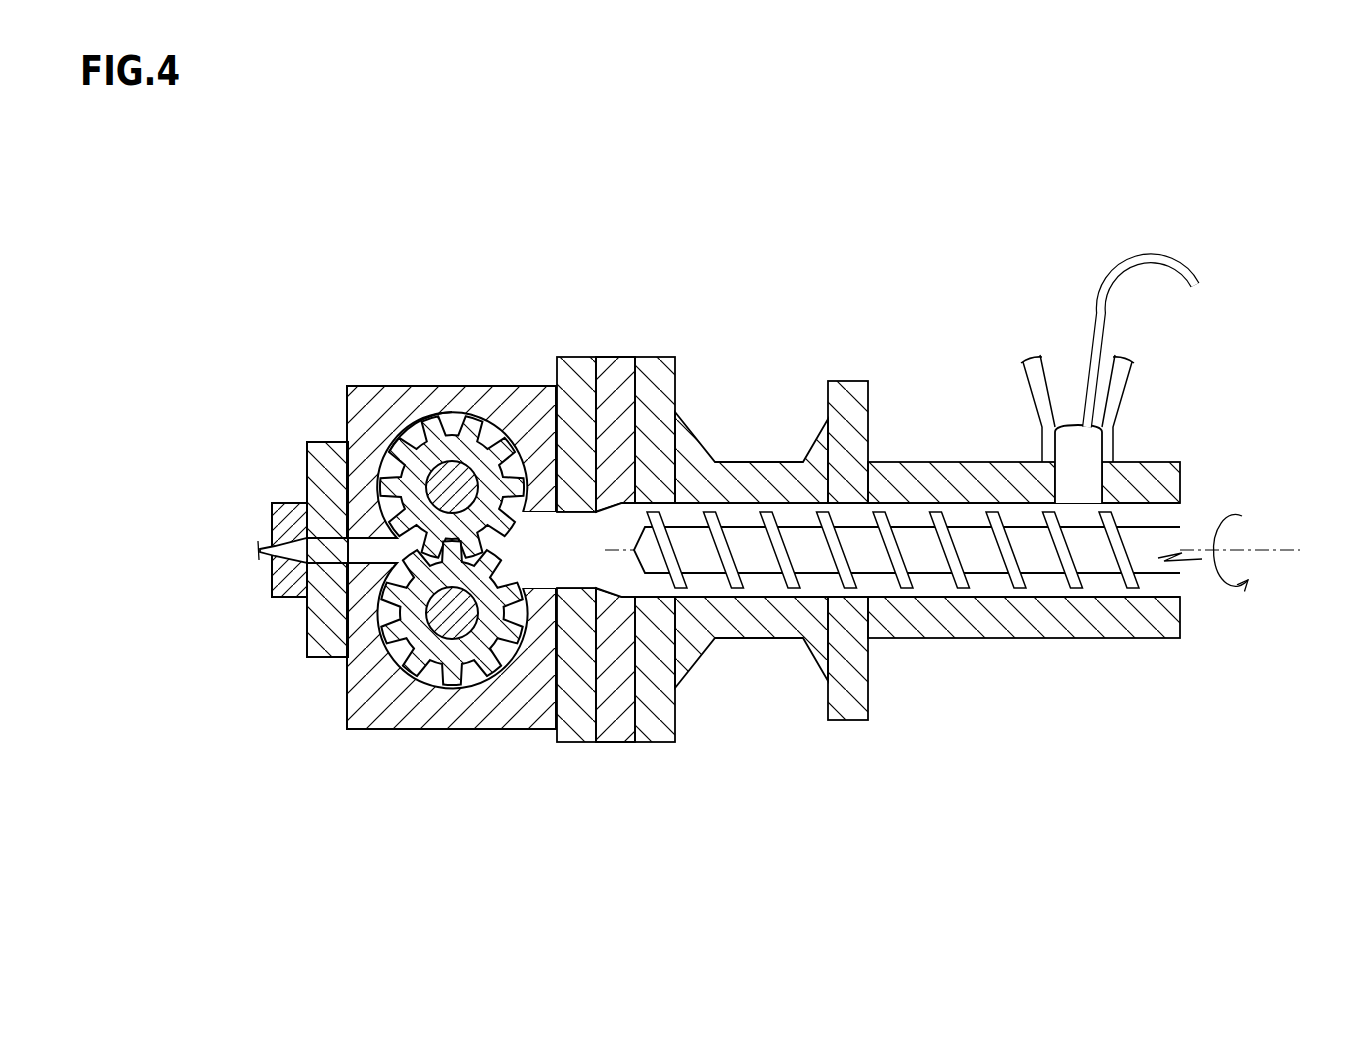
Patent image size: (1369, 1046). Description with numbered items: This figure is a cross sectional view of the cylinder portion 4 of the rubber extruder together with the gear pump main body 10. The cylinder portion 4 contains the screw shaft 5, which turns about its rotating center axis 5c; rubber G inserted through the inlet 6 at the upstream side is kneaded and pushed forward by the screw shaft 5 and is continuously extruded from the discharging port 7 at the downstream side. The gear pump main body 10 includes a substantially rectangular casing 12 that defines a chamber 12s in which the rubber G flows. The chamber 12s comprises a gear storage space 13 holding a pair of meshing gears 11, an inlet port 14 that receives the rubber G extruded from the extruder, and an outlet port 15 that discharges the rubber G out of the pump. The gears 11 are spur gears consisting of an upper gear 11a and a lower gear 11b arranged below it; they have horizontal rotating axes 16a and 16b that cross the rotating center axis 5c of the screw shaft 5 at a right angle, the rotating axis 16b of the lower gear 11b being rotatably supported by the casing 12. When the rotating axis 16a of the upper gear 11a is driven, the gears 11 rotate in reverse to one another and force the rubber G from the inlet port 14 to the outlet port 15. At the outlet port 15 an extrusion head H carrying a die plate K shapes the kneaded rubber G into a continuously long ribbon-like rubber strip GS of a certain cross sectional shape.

The gear pump main body 10 is at (449, 498).
The casing 12 is at (403, 385).
The gear storage space 13 is at (383, 453).
The chamber 12s is at (417, 432).
The outlet port 15 is at (357, 557).
The inlet port 14 is at (547, 570).
The gears 11 is at (480, 564).
The upper gear 11a is at (465, 453).
The lower gear 11b is at (466, 627).
The rotating axis of the upper gear 16a is at (452, 468).
The rotating axis of the lower gear 16b is at (478, 645).
The extrusion head H is at (283, 418).
The die plate K is at (287, 508).
The rubber strip GS is at (265, 557).
The discharging port 7 is at (568, 540).
The cylinder portion 4 is at (727, 398).
The screw shaft 5 is at (972, 538).
The rotating center axis of the screw shaft 5c is at (1282, 550).
The inlet 6 is at (1065, 297).
The unvulcanized rubber G is at (1145, 255).